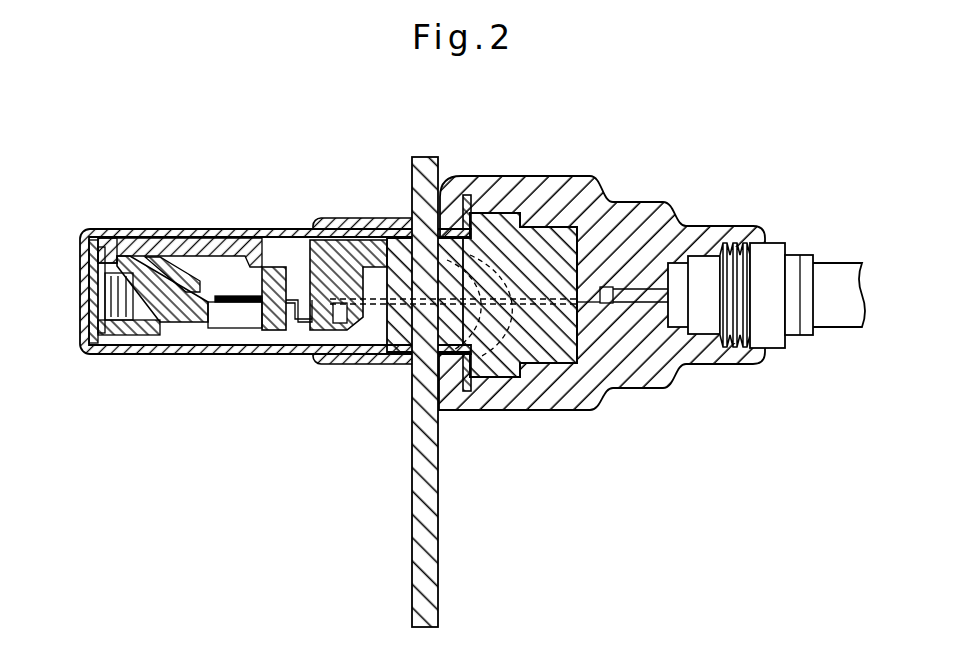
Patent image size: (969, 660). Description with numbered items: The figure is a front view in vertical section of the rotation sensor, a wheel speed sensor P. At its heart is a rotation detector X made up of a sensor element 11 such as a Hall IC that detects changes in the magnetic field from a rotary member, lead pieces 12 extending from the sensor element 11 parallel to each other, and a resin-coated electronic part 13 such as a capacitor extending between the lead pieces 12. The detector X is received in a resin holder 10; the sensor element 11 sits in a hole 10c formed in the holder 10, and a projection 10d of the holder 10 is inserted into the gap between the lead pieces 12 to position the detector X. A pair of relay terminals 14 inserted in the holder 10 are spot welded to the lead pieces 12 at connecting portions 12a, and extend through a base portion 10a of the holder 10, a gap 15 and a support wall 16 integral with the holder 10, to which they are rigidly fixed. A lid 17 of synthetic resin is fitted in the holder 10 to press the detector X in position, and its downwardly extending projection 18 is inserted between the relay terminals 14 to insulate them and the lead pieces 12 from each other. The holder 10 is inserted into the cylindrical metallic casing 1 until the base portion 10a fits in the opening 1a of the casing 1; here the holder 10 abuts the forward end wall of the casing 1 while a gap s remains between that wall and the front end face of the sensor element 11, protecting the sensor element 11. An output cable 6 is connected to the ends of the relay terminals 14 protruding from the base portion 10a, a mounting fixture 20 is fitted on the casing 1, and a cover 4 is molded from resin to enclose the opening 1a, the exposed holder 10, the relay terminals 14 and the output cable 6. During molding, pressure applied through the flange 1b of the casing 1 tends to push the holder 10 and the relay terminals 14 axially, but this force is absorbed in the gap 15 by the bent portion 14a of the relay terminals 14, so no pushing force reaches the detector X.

The casing 1 is at (112, 240).
The opening 1a is at (478, 345).
The flange 1b is at (447, 180).
The cover 4 is at (584, 206).
The output cable 6 is at (833, 292).
The holder 10 is at (152, 322).
The base portion 10a is at (484, 246).
The hole 10c is at (103, 333).
The projection 10d is at (115, 250).
The sensor element 11 is at (83, 348).
The lead pieces 12 is at (212, 303).
The connecting portions 12a is at (240, 297).
The electronic part 13 is at (172, 310).
The relay terminals 14 is at (545, 250).
The bent portion 14a is at (300, 333).
The gap 15 is at (340, 333).
The support wall 16 is at (262, 333).
The lid 17 is at (227, 245).
The projection 18 is at (325, 303).
The mounting fixture 20 is at (423, 188).
The gap s is at (83, 297).
The rotation detector X is at (150, 263).
The wheel speed sensor P is at (363, 142).